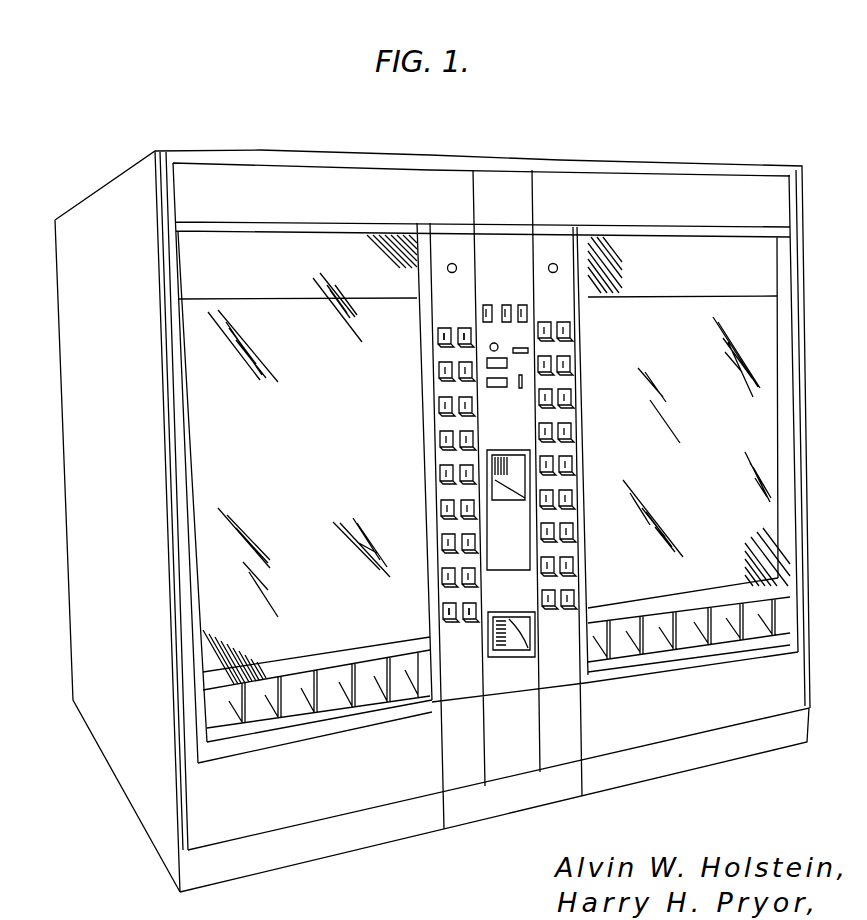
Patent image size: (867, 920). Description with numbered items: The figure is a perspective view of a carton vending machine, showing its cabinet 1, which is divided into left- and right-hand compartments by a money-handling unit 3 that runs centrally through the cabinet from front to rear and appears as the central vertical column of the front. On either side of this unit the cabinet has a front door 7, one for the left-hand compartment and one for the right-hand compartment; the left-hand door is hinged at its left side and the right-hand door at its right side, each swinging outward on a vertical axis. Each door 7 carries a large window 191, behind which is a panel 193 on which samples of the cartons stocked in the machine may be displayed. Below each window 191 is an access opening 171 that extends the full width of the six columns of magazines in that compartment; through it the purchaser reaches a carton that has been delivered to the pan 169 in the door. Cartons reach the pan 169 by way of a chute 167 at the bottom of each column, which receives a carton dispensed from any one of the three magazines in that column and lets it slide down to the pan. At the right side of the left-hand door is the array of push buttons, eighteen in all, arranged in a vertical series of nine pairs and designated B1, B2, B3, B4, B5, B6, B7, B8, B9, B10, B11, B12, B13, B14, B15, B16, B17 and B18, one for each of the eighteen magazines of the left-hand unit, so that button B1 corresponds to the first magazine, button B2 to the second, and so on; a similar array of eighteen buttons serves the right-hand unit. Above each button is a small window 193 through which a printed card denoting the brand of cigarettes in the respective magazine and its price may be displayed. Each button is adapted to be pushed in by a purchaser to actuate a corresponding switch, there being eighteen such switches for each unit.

The cabinet 1 is at (123, 165).
The money-handling unit 3 is at (496, 188).
The front door 7 is at (289, 829).
The chute 167 is at (222, 718).
The pan 169 is at (217, 737).
The access opening 171 is at (278, 732).
The window 191 is at (223, 520).
The small window 193 is at (462, 328).
The push button B1 is at (443, 621).
The push button B2 is at (482, 620).
The push button B3 is at (443, 587).
The push button B4 is at (481, 586).
The push button B5 is at (442, 553).
The push button B6 is at (481, 552).
The push button B7 is at (442, 519).
The push button B8 is at (480, 519).
The push button B9 is at (441, 484).
The push button B10 is at (478, 484).
The push button B11 is at (441, 449).
The push button B12 is at (477, 449).
The push button B13 is at (440, 415).
The push button B14 is at (477, 415).
The push button B15 is at (440, 381).
The push button B16 is at (476, 382).
The push button B17 is at (439, 346).
The push button B18 is at (472, 338).